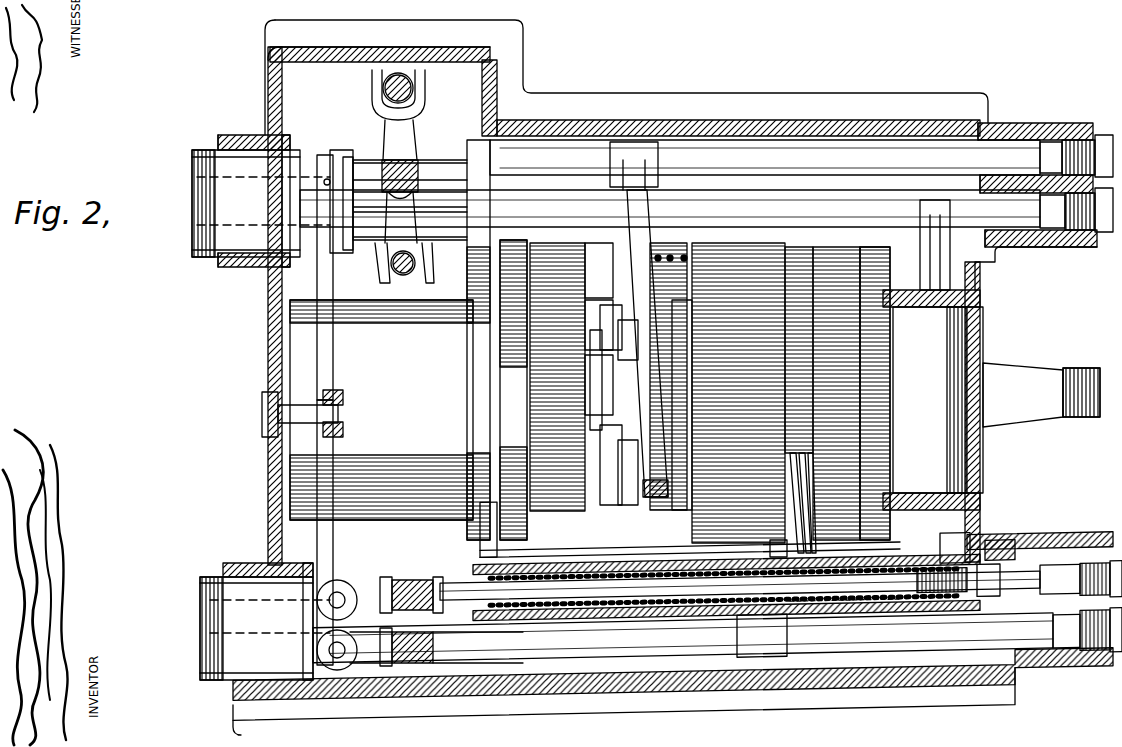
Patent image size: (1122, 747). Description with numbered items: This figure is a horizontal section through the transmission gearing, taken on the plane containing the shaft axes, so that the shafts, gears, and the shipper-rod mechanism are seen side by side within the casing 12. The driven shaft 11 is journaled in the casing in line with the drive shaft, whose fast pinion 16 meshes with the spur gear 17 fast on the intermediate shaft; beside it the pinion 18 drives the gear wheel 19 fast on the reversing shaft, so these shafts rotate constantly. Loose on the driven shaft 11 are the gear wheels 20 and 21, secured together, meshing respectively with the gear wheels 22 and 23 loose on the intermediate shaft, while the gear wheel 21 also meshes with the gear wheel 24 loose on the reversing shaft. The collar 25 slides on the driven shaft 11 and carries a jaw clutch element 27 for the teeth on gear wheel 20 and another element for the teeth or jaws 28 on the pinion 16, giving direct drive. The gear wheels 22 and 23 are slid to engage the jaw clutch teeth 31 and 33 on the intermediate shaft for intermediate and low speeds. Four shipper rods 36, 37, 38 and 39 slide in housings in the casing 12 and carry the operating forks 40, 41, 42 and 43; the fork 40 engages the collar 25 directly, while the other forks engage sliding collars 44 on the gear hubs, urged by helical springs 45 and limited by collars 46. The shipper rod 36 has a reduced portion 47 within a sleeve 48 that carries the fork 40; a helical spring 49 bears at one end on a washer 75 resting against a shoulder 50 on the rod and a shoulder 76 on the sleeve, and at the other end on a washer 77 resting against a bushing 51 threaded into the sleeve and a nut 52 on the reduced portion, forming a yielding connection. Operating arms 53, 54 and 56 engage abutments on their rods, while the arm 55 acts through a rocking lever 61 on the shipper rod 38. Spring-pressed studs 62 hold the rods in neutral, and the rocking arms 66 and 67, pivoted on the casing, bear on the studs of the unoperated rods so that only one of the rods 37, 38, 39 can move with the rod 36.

The driven shaft 11 is at (1041, 395).
The casing 12 is at (682, 122).
The pinion 16 is at (568, 508).
The spur gear 17 is at (563, 255).
The pinion 18 is at (475, 268).
The gear wheel 19 is at (487, 543).
The gear wheel 20 is at (768, 255).
The gear wheel 21 is at (873, 387).
The gear wheel 22 is at (715, 250).
The gear wheel 23 is at (837, 243).
The gear wheel 24 is at (838, 560).
The collar 25 is at (630, 508).
The jaw clutch element 27 is at (686, 510).
The teeth or jaws 28 is at (603, 508).
The jaw clutch teeth 31 is at (774, 398).
The jaw clutch teeth 33 is at (790, 257).
The shipper rod 36 is at (445, 590).
The shipper rod 37 is at (733, 187).
The shipper rod 38 is at (652, 203).
The shipper rod 39 is at (717, 638).
The operating fork 40 is at (648, 360).
The operating fork 41 is at (637, 190).
The operating fork 42 is at (932, 270).
The operating fork 43 is at (760, 620).
The sliding collar 44 is at (622, 285).
The helical spring 45 is at (668, 375).
The collar 46 is at (599, 270).
The reduced portion 47 is at (865, 616).
The sleeve 48 is at (800, 610).
The helical spring 49 is at (713, 612).
The shoulder 50 is at (510, 596).
The bushing 51 is at (965, 540).
The nut 52 is at (990, 558).
The operating arm 53 is at (392, 582).
The operating arm 54 is at (386, 160).
The operating arm 55 is at (383, 88).
The operating arm 56 is at (435, 648).
The rocking lever 61 is at (410, 142).
The spring-pressed stud 62 is at (340, 222).
The rocking arm 66 is at (334, 545).
The rocking arm 67 is at (338, 215).
The washer 75 is at (485, 568).
The shoulder 76 is at (480, 615).
The washer 77 is at (918, 610).